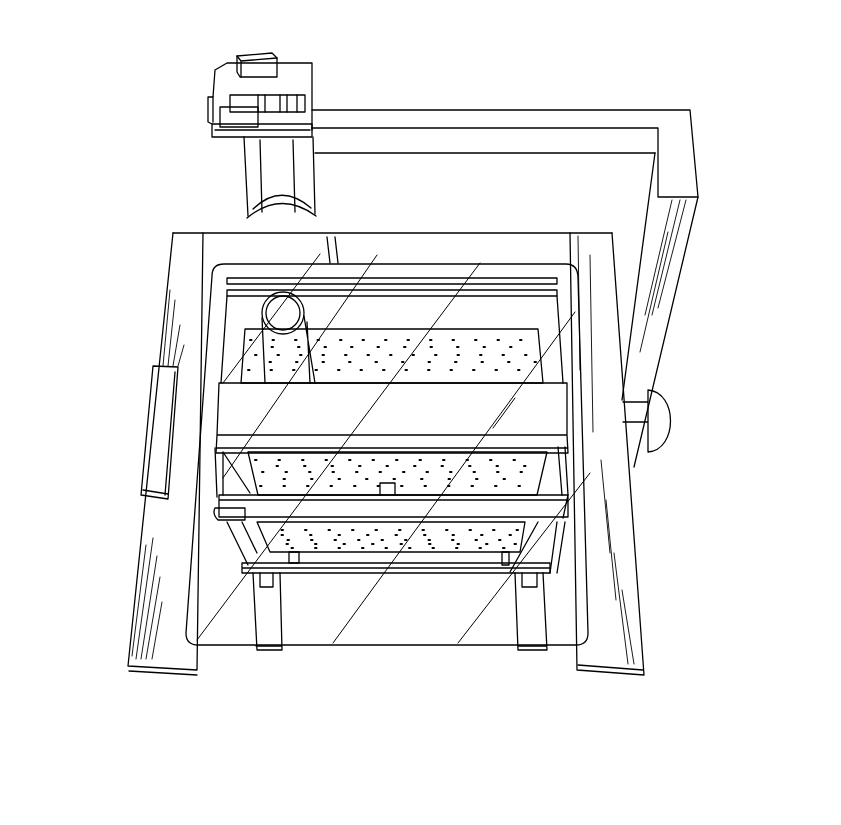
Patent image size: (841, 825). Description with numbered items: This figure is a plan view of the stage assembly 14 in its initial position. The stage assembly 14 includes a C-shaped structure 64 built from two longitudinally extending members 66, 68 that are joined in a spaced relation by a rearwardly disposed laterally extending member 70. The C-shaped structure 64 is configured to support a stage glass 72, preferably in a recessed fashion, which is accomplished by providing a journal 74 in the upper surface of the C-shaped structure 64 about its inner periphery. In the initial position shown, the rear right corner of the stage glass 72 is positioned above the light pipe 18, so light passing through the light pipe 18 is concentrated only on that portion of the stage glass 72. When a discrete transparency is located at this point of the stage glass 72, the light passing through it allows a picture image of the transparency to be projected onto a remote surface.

The stage assembly 14 is at (118, 195).
The light pipe 18 is at (262, 305).
The C-shaped structure 64 is at (205, 232).
The longitudinally extending member 66 is at (624, 541).
The longitudinally extending member 68 is at (153, 510).
The rearwardly disposed laterally extending member 70 is at (303, 247).
The stage glass 72 is at (382, 315).
The journal 74 is at (538, 270).